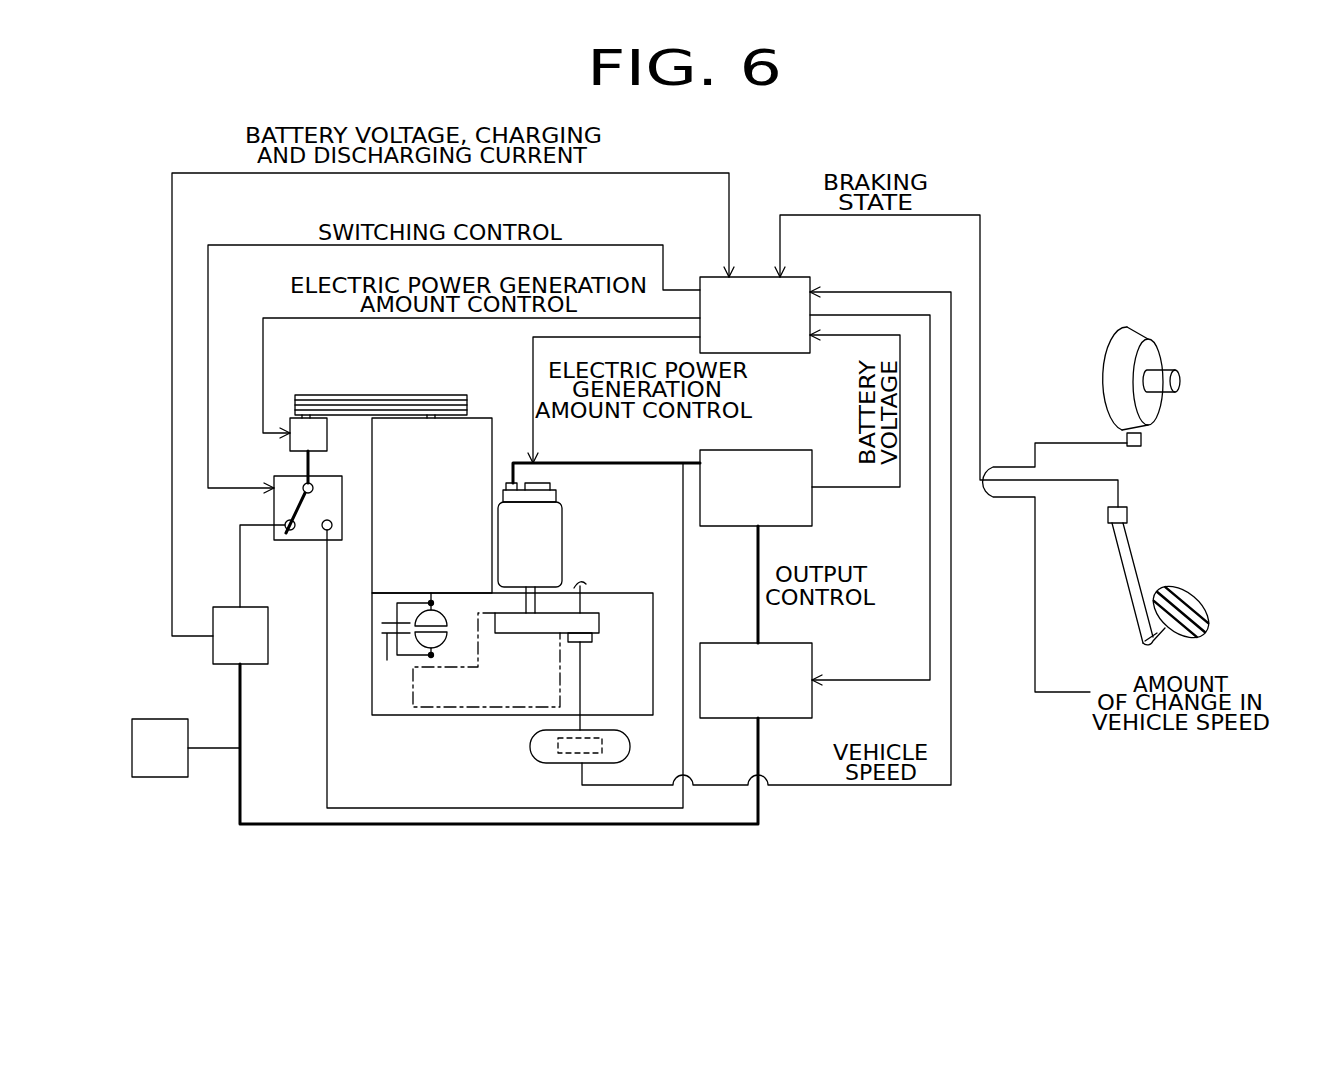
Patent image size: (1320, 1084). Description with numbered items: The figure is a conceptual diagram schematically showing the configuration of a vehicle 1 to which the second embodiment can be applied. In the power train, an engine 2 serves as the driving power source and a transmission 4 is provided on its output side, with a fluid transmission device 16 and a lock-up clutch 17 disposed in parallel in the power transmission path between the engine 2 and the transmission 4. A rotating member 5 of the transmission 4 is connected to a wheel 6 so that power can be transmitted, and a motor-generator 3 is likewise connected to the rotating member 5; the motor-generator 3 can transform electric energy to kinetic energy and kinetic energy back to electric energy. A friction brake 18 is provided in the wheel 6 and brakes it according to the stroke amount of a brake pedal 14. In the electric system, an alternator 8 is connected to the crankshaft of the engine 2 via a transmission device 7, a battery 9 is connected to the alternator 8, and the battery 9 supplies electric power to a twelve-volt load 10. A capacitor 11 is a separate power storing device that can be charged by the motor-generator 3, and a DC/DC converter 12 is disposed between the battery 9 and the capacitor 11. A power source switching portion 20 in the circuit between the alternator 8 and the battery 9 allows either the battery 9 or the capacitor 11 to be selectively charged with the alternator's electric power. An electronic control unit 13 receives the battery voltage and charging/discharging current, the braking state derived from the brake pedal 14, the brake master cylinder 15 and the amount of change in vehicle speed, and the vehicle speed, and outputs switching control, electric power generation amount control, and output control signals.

The vehicle 1 is at (203, 808).
The engine 2 is at (402, 560).
The motor-generator 3 is at (537, 525).
The transmission 4 is at (443, 687).
The rotating member 5 is at (535, 620).
The wheel 6 is at (622, 743).
The transmission device 7 is at (353, 408).
The alternator 8 is at (300, 440).
The battery 9 is at (228, 620).
The 12V-load 10 is at (148, 733).
The capacitor 11 is at (720, 508).
The DC/DC converter 12 is at (722, 702).
The electronic control unit 13 is at (758, 295).
The brake pedal 14 is at (1180, 607).
The brake master cylinder 15 is at (1152, 408).
The fluid transmission device 16 is at (440, 613).
The lock-up clutch 17 is at (392, 658).
The friction brake 18 is at (558, 748).
The power source switching portion 20 is at (295, 542).